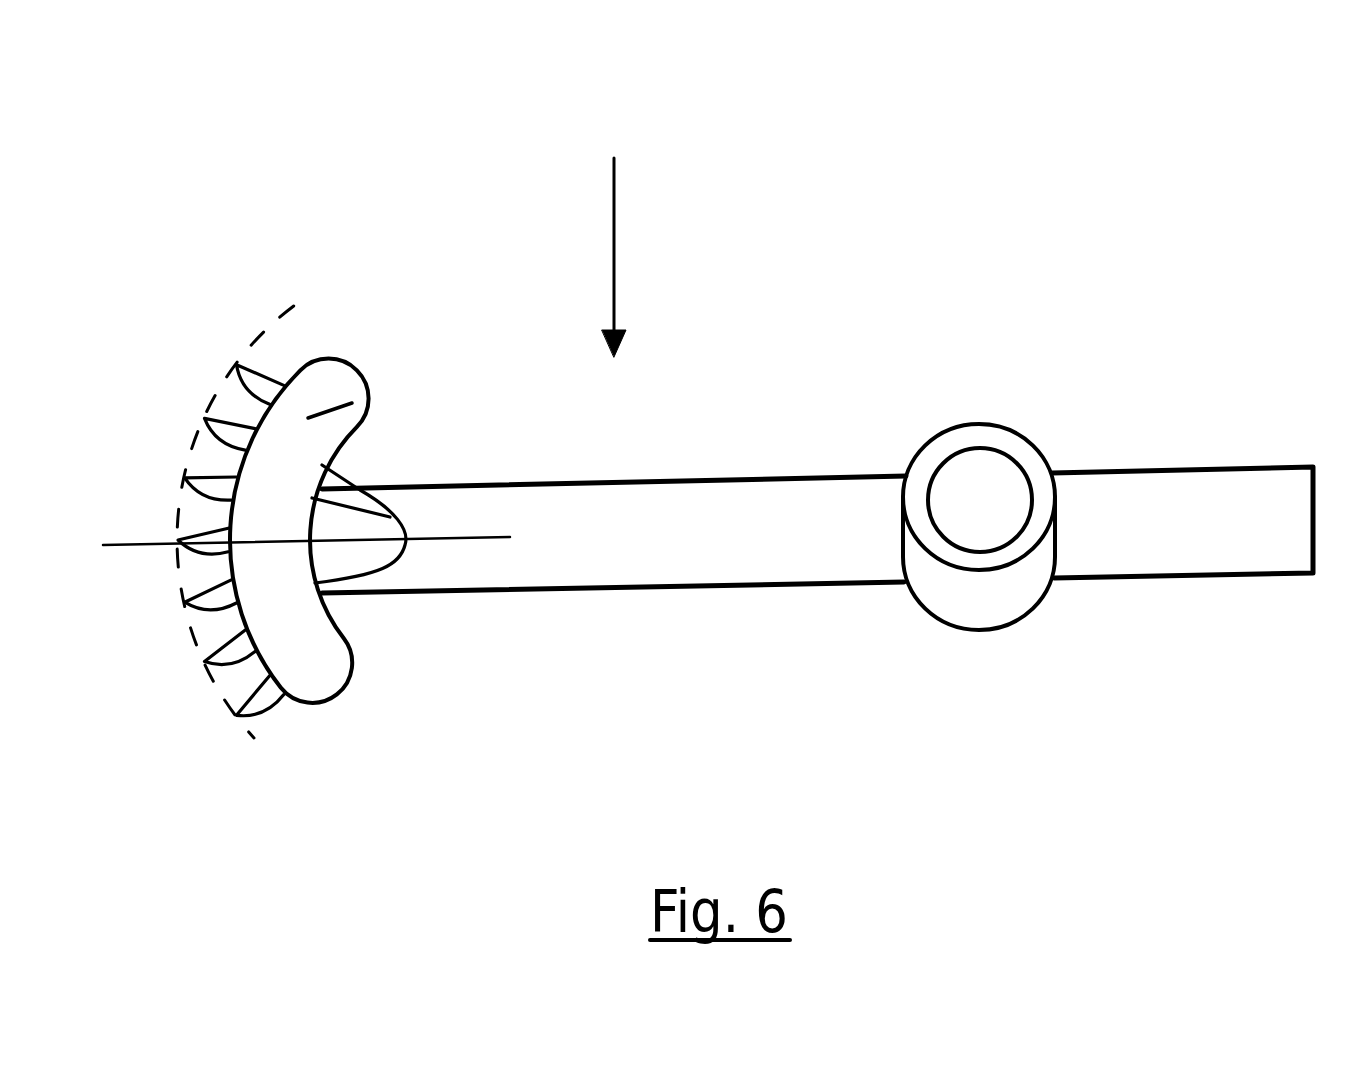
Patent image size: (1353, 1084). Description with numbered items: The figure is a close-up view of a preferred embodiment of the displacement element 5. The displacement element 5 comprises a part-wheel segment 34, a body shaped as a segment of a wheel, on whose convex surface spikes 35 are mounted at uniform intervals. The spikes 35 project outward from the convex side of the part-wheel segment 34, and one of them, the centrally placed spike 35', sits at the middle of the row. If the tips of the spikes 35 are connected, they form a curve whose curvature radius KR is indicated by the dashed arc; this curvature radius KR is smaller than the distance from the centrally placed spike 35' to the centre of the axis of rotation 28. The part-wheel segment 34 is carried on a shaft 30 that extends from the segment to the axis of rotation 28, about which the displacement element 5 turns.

The displacement element 5 is at (612, 224).
The axis of rotation 28 is at (985, 490).
The shaft 30 is at (717, 535).
The part-wheel segment 34 is at (360, 399).
The spikes 35 is at (225, 468).
The centrally placed spike 35' is at (289, 461).
The curvature radius KR is at (260, 333).